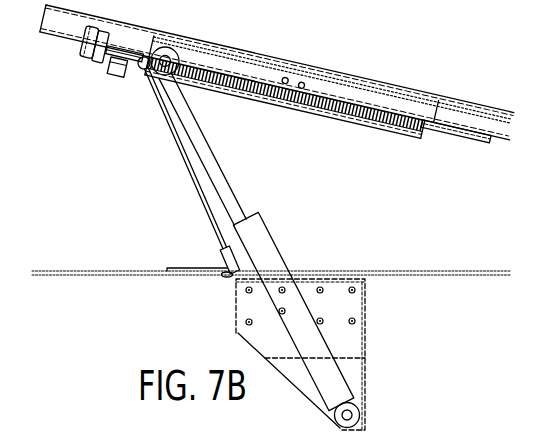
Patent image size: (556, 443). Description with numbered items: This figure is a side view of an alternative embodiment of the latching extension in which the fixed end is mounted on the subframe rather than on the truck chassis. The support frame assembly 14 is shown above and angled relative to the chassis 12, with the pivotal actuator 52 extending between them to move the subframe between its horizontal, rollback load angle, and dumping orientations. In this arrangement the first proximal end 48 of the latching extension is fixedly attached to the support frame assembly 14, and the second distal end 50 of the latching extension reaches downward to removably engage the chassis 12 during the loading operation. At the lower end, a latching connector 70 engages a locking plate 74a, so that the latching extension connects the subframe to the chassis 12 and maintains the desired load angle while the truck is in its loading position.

The chassis 12 is at (418, 321).
The support frame assembly 14 is at (338, 83).
The first proximal end 48 is at (137, 67).
The second distal end 50 is at (223, 250).
The pivotal actuator 52 is at (273, 248).
The latching connector 70 is at (230, 275).
The locking plate 74a is at (185, 268).